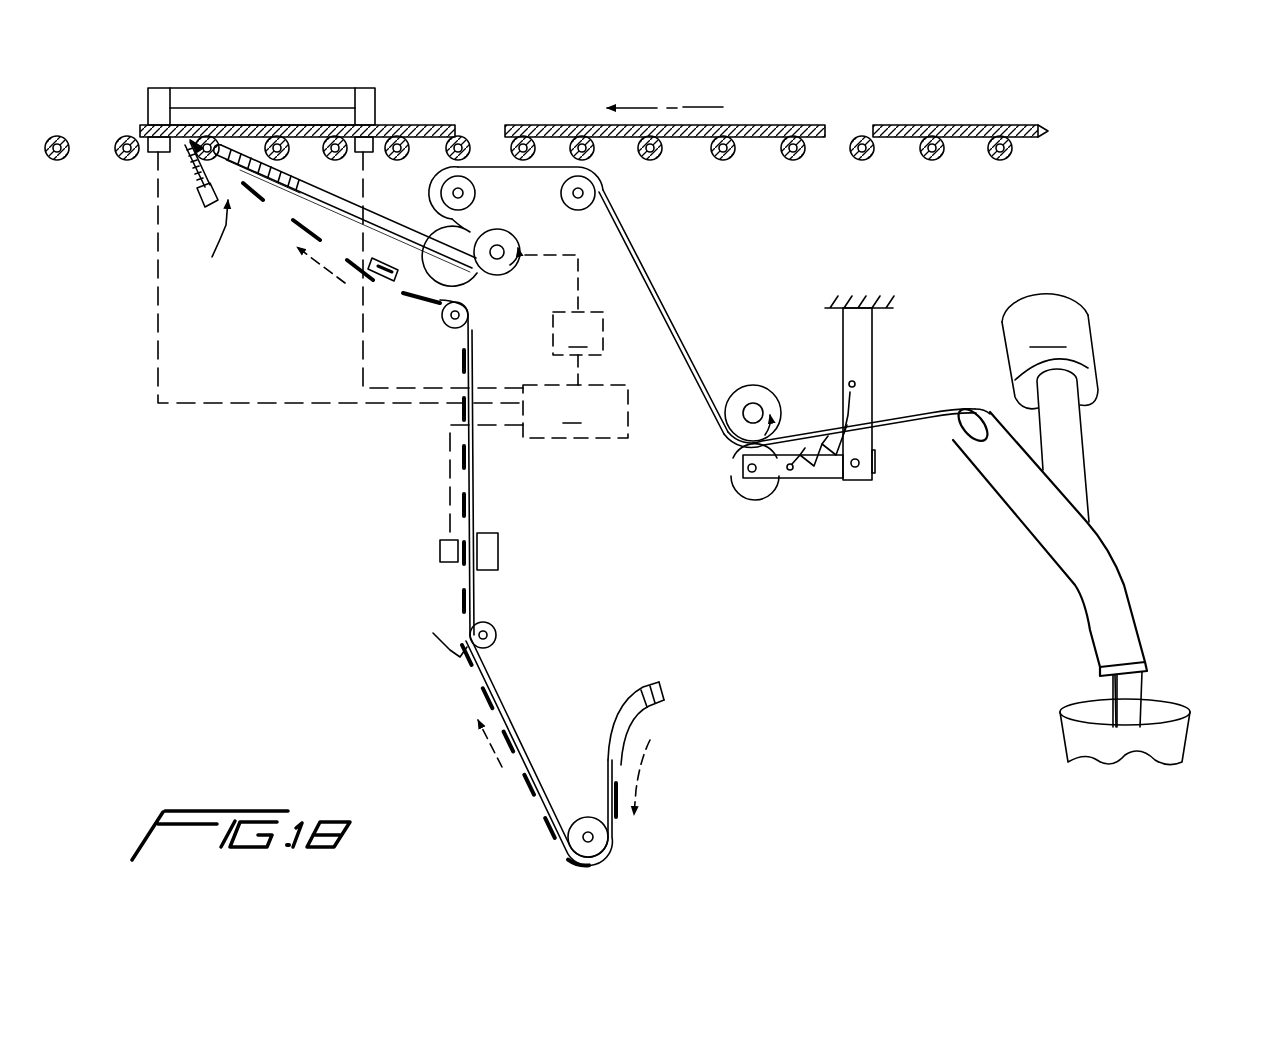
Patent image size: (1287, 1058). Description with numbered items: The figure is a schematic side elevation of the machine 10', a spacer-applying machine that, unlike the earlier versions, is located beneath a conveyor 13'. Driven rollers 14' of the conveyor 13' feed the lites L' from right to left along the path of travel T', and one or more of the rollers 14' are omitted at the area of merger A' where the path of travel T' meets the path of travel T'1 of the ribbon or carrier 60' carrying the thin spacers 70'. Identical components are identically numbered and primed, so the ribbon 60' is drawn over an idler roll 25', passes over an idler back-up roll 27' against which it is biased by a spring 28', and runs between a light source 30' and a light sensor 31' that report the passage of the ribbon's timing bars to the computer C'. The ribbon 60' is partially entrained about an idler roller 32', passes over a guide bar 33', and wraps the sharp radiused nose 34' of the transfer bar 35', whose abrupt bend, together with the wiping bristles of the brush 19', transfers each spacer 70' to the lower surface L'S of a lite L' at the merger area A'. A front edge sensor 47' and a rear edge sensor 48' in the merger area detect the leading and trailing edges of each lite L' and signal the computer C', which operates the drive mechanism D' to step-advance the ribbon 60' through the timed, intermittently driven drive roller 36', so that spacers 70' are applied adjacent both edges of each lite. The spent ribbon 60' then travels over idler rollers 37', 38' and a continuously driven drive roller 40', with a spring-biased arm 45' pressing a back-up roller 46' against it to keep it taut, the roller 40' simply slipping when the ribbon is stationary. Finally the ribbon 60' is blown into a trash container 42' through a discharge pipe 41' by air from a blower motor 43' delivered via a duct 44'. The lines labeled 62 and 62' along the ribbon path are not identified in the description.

The machine 10' is at (1139, 183).
The conveyor 13' is at (730, 197).
The driven rollers 14' is at (550, 153).
The brush 19' is at (161, 204).
The idler roll 25' is at (633, 845).
The idler back-up roll 27' is at (526, 621).
The spring 28' is at (418, 661).
The light source 30' is at (415, 557).
The light sensor 31' is at (535, 554).
The idler roller 32' is at (427, 339).
The guide bar 33' is at (370, 323).
The sharp radiused nose 34' is at (345, 163).
The transfer bar 35' is at (355, 217).
The drive roller 36' is at (500, 252).
The idler roller 37' is at (516, 193).
The idler roller 38' is at (661, 312).
The drive roller 40' is at (765, 387).
The discharge pipe 41' is at (1069, 540).
The trash container 42' is at (1159, 732).
The blower motor 43' is at (1050, 351).
The duct 44' is at (1094, 445).
The spring-biased arm 45' is at (818, 419).
The back-up roller 46' is at (745, 495).
The front edge sensor 47' is at (223, 105).
The rear edge sensor 48' is at (340, 299).
The ribbon 60' is at (874, 727).
The tape 62 is at (836, 357).
The tape 62' is at (778, 583).
The spacers 70' is at (289, 193).
The area of merger A' is at (205, 244).
The computer C' is at (575, 411).
The drive mechanism D' is at (564, 320).
The lites L' is at (594, 100).
The lower surface L'S is at (679, 181).
The path of travel T' is at (665, 83).
The path of travel T'1 is at (392, 530).